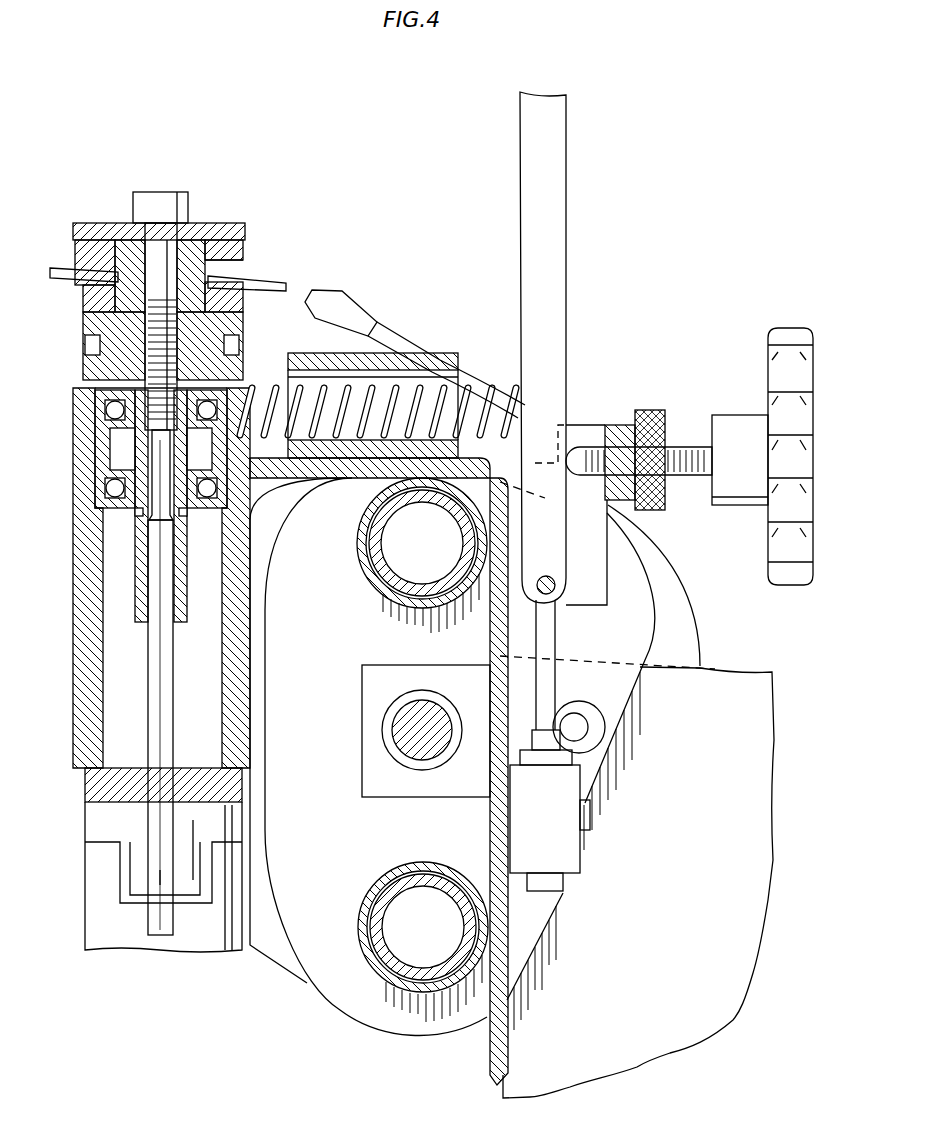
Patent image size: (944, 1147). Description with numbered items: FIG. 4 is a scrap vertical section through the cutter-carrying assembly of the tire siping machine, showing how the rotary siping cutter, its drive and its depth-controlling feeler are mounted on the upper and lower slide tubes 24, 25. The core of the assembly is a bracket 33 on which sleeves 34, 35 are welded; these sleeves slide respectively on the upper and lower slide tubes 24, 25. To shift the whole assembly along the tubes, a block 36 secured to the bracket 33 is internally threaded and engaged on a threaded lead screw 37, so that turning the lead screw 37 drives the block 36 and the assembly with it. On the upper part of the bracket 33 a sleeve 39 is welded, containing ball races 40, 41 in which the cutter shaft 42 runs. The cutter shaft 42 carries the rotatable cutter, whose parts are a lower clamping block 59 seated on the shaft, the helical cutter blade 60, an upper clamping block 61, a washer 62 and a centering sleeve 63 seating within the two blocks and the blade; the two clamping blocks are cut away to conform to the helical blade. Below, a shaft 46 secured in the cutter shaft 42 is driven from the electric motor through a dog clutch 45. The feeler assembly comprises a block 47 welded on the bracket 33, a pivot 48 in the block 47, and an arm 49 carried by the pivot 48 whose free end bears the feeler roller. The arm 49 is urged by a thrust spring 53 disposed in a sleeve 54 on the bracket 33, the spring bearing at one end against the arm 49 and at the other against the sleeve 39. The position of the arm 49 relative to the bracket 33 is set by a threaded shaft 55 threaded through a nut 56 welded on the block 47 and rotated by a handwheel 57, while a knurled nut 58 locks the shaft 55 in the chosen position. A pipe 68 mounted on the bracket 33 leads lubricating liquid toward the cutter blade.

The upper slide tube 24 is at (400, 583).
The lower slide tube 25 is at (395, 960).
The bracket 33 is at (492, 641).
The sleeve 34 is at (362, 562).
The sleeve 35 is at (398, 873).
The block 36 is at (418, 790).
The threaded lead screw 37 is at (400, 730).
The sleeve 39 is at (80, 562).
The ball race 40 is at (105, 398).
The ball race 41 is at (100, 498).
The cutter shaft 42 is at (140, 452).
The dog clutch 45 is at (95, 870).
The shaft 46 is at (156, 640).
The block 47 is at (600, 592).
The pivot 48 is at (552, 596).
The arm 49 is at (552, 330).
The thrust spring 53 is at (448, 392).
The sleeve 54 is at (312, 358).
The threaded shaft 55 is at (690, 458).
The nut 56 is at (615, 430).
The handwheel 57 is at (775, 392).
The knurled nut 58 is at (655, 412).
The lower clamping block 59 is at (238, 300).
The helical cutter blade 60 is at (262, 282).
The upper clamping block 61 is at (232, 252).
The washer 62 is at (228, 230).
The centering sleeve 63 is at (145, 228).
The pipe 68 is at (395, 330).